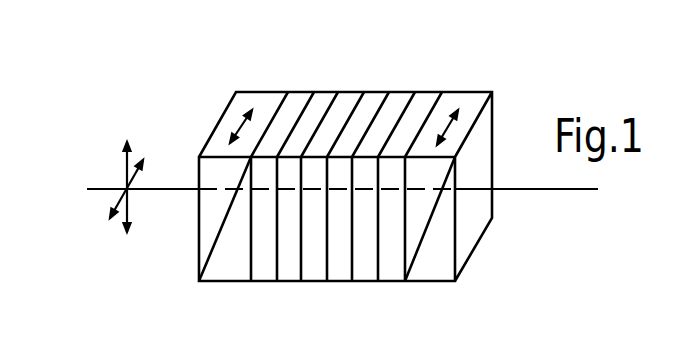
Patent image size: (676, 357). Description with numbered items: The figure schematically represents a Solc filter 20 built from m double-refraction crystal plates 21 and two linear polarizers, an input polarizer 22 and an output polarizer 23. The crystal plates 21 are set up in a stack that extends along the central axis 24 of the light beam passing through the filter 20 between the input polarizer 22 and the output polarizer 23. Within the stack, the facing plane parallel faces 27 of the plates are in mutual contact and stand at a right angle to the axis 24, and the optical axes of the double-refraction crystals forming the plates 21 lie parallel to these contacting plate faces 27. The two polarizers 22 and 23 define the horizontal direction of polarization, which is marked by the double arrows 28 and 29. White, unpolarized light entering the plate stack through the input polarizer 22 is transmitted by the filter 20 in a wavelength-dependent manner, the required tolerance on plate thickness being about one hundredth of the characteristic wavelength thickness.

The Solc filter 20 is at (336, 87).
The double-refraction crystal plates 21 is at (377, 98).
The input polarizer 22 is at (218, 143).
The output polarizer 23 is at (488, 93).
The central axis 24 is at (530, 190).
The plane parallel faces 27 is at (302, 228).
The double arrow 28 is at (243, 127).
The double arrow 29 is at (446, 125).